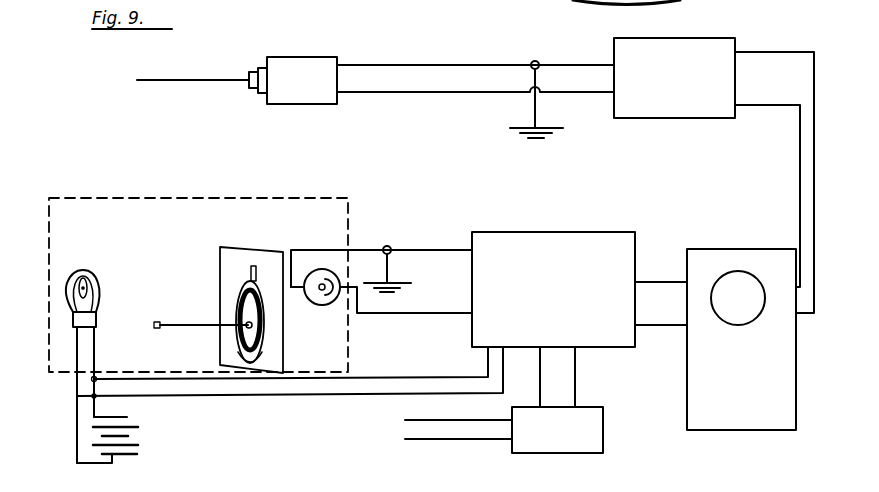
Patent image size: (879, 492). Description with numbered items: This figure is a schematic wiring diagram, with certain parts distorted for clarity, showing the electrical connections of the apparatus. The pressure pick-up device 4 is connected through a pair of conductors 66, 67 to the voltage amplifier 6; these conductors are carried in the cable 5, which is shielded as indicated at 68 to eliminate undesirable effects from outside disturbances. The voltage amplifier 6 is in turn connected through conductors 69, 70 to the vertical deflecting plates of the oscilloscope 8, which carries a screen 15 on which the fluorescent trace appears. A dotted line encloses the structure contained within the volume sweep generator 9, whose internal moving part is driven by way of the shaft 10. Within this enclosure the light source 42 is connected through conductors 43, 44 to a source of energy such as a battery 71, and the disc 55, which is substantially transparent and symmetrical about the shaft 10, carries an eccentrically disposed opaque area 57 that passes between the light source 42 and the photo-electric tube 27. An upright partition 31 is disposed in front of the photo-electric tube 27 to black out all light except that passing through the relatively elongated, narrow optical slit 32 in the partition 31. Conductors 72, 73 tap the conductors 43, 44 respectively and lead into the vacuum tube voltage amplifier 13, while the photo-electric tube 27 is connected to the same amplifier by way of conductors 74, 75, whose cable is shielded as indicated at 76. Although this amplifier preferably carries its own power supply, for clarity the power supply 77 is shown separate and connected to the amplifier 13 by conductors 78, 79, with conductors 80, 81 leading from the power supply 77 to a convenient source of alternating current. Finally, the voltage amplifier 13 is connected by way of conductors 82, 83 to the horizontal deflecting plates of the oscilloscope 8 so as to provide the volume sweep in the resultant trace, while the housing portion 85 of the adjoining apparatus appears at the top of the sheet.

The pressure pick-up device 4 is at (299, 57).
The cable 5 is at (255, 358).
The voltage amplifier 6 is at (670, 118).
The oscilloscope 8 is at (696, 358).
The volume sweep generator 9 is at (130, 194).
The shaft 10 is at (174, 325).
The vacuum tube voltage amplifier 13 is at (510, 236).
The indicating meter 15 is at (730, 284).
The photo-electric tube 27 is at (318, 270).
The upright partition 31 is at (246, 248).
The optical slit 32 is at (255, 268).
The light source 42 is at (86, 274).
The conductor 43 is at (76, 360).
The conductor 44 is at (95, 361).
The disc 55 is at (252, 356).
The opaque area 57 is at (264, 351).
The conductor 66 is at (418, 63).
The conductor 67 is at (416, 93).
The shield 68 is at (531, 67).
The conductor 69 is at (800, 128).
The conductor 70 is at (814, 153).
The battery 71 is at (130, 452).
The conductor 72 is at (322, 380).
The conductor 73 is at (358, 400).
The conductor 74 is at (408, 248).
The conductor 75 is at (404, 313).
The shield 76 is at (392, 266).
The power supply 77 is at (576, 446).
The conductor 78 is at (541, 390).
The conductor 79 is at (577, 384).
The conductor 80 is at (447, 418).
The conductor 81 is at (452, 441).
The conductor 82 is at (640, 281).
The conductor 83 is at (640, 324).
The housing 85 is at (588, 4).